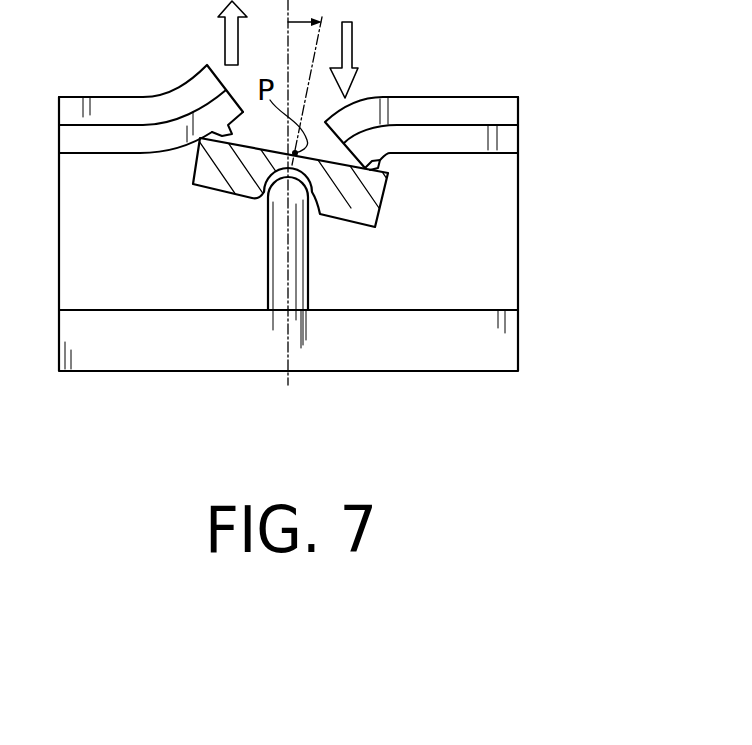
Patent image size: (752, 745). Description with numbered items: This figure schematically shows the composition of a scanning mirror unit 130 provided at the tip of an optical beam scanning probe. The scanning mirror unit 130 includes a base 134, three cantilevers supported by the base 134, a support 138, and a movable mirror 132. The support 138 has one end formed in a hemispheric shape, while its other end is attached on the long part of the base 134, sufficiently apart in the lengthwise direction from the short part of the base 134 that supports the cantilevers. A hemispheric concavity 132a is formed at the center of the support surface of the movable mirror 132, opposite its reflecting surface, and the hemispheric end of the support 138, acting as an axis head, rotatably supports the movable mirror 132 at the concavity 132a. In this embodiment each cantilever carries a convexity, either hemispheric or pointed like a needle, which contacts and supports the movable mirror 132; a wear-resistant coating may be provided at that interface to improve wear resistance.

The scanning mirror unit 130 is at (550, 215).
The movable mirror 132 is at (372, 203).
The hemispheric concavity 132a is at (262, 194).
The base 134 is at (378, 345).
The support 138 is at (305, 273).